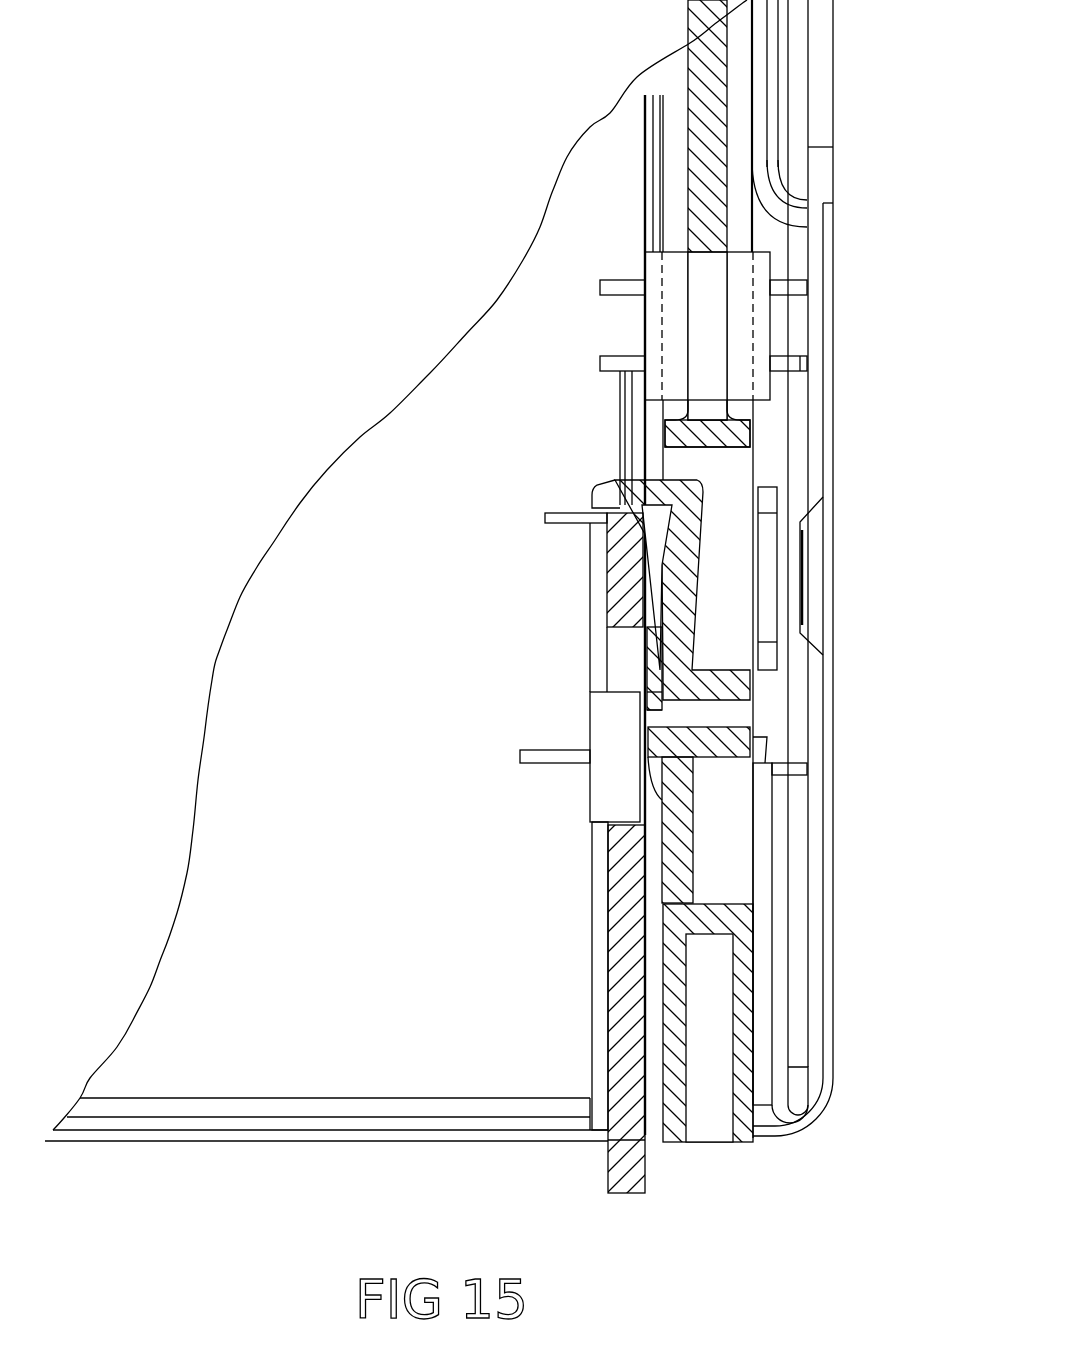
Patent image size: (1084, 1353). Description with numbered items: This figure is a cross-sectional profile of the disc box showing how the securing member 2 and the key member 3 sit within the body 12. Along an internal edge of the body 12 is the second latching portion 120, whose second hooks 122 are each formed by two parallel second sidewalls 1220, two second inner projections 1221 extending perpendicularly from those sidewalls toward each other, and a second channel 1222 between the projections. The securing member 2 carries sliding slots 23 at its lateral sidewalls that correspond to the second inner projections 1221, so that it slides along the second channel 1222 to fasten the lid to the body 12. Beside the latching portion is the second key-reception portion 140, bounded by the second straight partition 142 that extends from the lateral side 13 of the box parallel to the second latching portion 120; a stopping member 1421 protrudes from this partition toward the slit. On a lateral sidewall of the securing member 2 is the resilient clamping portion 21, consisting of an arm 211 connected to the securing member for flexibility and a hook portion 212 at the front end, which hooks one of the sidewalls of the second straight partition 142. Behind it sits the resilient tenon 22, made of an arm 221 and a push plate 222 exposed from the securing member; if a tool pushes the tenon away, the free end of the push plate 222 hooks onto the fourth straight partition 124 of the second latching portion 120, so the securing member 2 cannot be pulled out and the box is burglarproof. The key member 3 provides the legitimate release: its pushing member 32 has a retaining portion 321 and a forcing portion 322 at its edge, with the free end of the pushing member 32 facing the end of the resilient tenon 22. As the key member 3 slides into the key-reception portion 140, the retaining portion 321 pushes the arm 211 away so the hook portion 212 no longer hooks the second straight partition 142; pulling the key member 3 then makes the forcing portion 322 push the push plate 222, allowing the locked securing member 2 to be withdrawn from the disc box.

The securing member 2 is at (735, 230).
The key member 3 is at (620, 966).
The body 12 is at (237, 1063).
The lateral side 13 is at (350, 1127).
The resilient clamping portion 21 is at (662, 548).
The resilient tenon 22 is at (668, 832).
The sliding slot 23 is at (673, 158).
The pushing member 32 is at (647, 658).
The second latching portion 120 is at (708, 1143).
The second hook 122 is at (634, 269).
The fourth straight partition 124 is at (765, 792).
The second key-reception portion 140 is at (626, 1150).
The second straight partition 142 is at (605, 910).
The arm 211 is at (665, 600).
The hook portion 212 is at (612, 488).
The arm 221 is at (670, 880).
The push plate 222 is at (713, 740).
The retaining portion 321 is at (623, 562).
The forcing portion 322 is at (643, 727).
The second sidewall 1220 is at (655, 326).
The second inner projection 1221 is at (680, 362).
The second channel 1222 is at (705, 275).
The stopping member 1421 is at (605, 790).